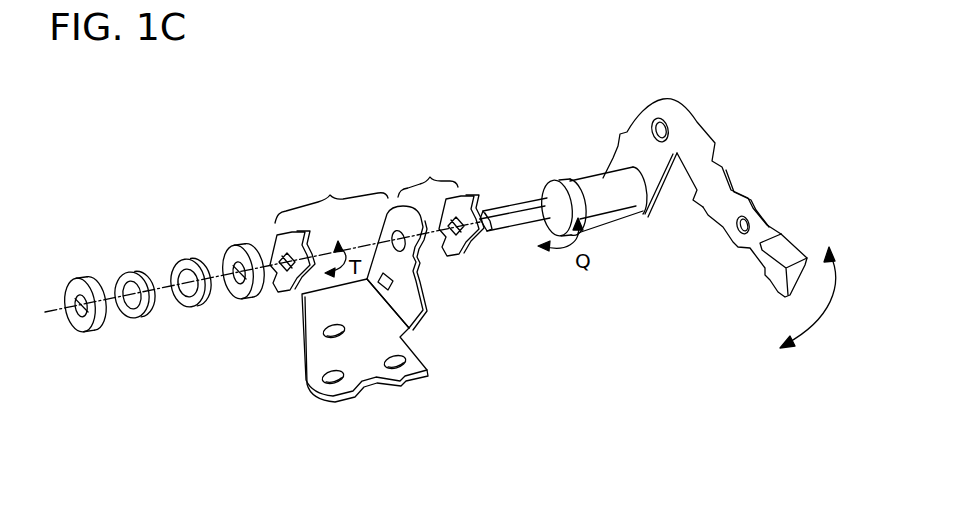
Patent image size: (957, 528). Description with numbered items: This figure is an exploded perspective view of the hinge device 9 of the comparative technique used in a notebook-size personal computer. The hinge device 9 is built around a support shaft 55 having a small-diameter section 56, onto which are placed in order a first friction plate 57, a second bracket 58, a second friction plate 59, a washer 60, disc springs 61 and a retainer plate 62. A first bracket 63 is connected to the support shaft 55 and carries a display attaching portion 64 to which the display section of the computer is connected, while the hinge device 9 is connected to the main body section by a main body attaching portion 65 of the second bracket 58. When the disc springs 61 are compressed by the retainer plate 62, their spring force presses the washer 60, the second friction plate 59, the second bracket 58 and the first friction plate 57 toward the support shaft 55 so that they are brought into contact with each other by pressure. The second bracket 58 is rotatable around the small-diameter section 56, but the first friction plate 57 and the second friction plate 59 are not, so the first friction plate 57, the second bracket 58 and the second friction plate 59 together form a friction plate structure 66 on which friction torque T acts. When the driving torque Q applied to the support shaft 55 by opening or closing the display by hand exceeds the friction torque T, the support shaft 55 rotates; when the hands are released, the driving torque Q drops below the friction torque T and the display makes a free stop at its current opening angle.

The hinge device 9 is at (196, 139).
The support shaft 55 is at (596, 178).
The small-diameter section 56 is at (511, 206).
The first friction plate 57 is at (467, 248).
The second bracket 58 is at (418, 278).
The second friction plate 59 is at (283, 292).
The washer 60 is at (240, 244).
The disc springs 61 is at (186, 256).
The retainer plate 62 is at (80, 276).
The first bracket 63 is at (690, 113).
The display attaching portion 64 is at (750, 204).
The main body attaching portion 65 is at (313, 396).
The friction plate structure 66 is at (430, 180).